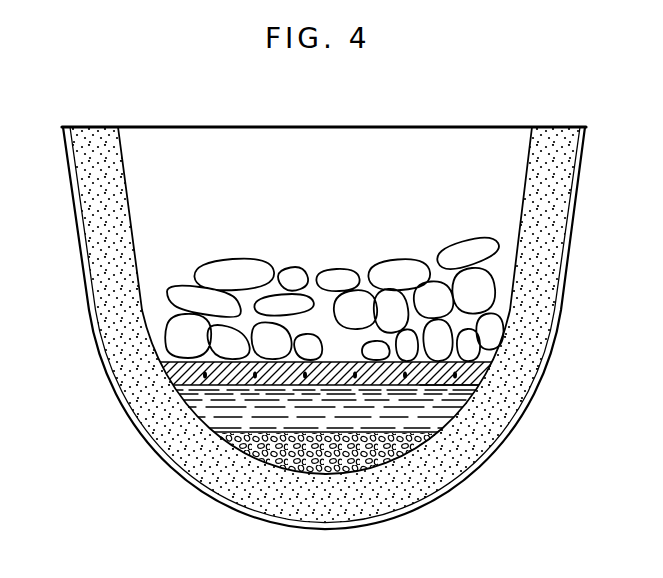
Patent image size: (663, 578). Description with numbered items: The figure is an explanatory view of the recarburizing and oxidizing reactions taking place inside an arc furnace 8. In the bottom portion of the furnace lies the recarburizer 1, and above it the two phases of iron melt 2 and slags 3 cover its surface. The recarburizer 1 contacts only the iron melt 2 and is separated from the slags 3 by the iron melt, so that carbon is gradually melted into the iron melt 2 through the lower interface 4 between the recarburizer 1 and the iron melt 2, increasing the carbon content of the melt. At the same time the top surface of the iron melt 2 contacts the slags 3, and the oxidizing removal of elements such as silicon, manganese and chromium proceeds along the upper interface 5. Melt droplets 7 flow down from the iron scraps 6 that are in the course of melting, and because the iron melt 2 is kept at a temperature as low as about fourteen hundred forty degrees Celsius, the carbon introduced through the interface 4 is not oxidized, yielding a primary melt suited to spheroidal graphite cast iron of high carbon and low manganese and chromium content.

The recarburizer 1 is at (222, 447).
The iron melt 2 is at (438, 387).
The slags 3 is at (493, 370).
The interface 4 is at (225, 432).
The interface 5 is at (158, 367).
The iron scraps 6 is at (488, 251).
The melt droplets 7 is at (428, 366).
The arc furnace 8 is at (103, 199).